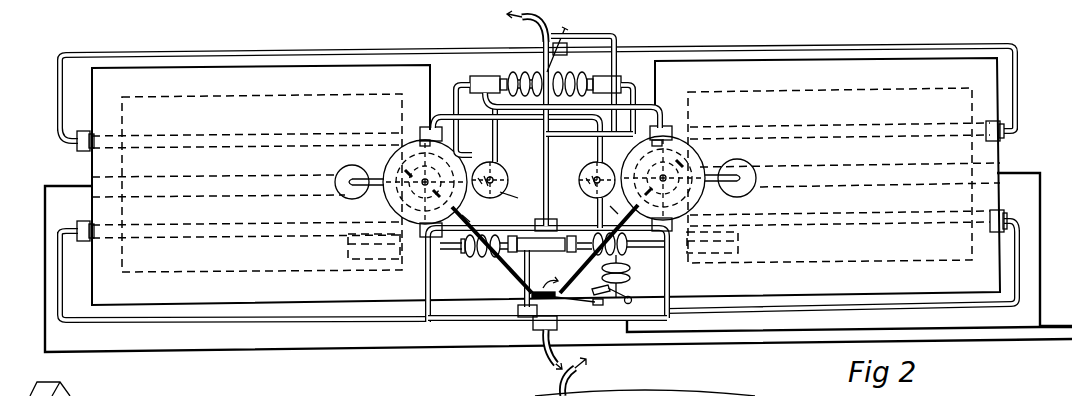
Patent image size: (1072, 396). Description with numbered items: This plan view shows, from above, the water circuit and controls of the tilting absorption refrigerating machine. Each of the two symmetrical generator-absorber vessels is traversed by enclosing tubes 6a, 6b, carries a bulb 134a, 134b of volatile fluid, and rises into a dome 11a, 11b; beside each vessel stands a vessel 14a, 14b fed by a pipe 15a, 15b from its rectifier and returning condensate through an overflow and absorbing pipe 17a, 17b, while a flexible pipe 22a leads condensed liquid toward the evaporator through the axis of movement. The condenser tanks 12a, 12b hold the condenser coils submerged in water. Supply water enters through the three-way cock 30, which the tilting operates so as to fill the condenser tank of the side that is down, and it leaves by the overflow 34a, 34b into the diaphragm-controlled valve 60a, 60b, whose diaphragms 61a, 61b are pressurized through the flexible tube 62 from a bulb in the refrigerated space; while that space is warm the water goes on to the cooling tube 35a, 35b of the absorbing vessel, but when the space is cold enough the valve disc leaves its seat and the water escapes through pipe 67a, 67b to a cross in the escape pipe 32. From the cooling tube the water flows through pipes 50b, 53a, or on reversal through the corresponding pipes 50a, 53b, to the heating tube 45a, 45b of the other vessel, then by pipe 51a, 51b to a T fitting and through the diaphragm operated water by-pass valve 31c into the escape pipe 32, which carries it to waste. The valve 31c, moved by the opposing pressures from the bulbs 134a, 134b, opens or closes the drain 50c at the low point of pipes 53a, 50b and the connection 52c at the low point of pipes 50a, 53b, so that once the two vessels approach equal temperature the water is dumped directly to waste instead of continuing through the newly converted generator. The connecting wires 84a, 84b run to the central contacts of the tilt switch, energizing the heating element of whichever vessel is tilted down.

The pipe 50a is at (308, 54).
The pipe 53b is at (716, 48).
The pipe 53a is at (180, 326).
The pipe 50b is at (835, 311).
The drain pipe 50c is at (530, 281).
The cooling tube 35a is at (204, 139).
The cooling tube 35b is at (840, 230).
The heating tube 45a is at (194, 241).
The heating tube 45b is at (868, 129).
The enclosing tube 6a is at (174, 181).
The enclosing tube 6b is at (904, 171).
The bulb 134a is at (355, 261).
The bulb 134b is at (724, 255).
The dome 11a is at (343, 168).
The dome 11b is at (752, 165).
The condenser tank 12a is at (394, 163).
The condenser tank 12b is at (696, 158).
The vessel 14a is at (496, 174).
The vessel 14b is at (592, 163).
The overflow and absorbing pipe 17a is at (498, 178).
The overflow and absorbing pipe 17b is at (579, 170).
The flexible pipe 22a is at (519, 191).
The pipe 15a is at (479, 213).
The pipe 15b is at (610, 212).
The connection 52c is at (556, 197).
The escape pipe 32 is at (540, 57).
The diaphragm-controlled valve 60a is at (466, 76).
The diaphragm-controlled valve 60b is at (618, 76).
The diaphragm 61a is at (518, 78).
The diaphragm 61b is at (560, 76).
The overflow 34a is at (440, 113).
The overflow 34b is at (648, 104).
The pipe 51a is at (500, 228).
The pipe 51b is at (560, 137).
The pipe 67a is at (448, 138).
The pipe 67b is at (604, 222).
The connecting wire 84a is at (490, 264).
The connecting wire 84b is at (568, 290).
The diaphragm operated water by-pass valve 31c is at (548, 252).
The three-way cock 30 is at (538, 334).
The flexible tube 62 is at (623, 394).